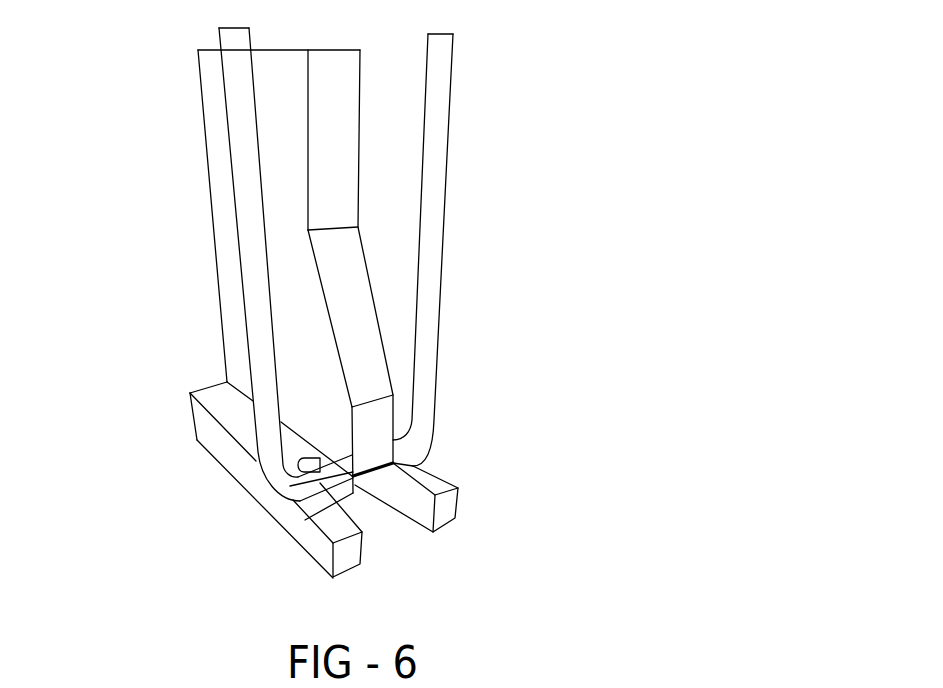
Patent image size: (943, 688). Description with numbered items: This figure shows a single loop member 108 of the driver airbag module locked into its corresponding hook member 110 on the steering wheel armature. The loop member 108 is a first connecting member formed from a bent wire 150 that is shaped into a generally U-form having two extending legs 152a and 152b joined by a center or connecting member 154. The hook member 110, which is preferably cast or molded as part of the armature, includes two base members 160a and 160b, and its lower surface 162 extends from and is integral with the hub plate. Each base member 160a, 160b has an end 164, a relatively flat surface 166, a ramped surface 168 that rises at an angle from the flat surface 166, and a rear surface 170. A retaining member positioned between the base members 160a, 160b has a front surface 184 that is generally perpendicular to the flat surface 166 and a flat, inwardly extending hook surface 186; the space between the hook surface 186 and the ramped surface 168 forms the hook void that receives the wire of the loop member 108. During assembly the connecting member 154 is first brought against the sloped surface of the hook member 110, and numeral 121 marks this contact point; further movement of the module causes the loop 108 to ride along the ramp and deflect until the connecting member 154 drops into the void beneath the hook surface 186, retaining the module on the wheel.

The first connecting member 108 is at (449, 257).
The hook member 110 is at (200, 143).
The contact point 121 is at (329, 249).
The bent wire 150 is at (455, 93).
The leg 152a is at (220, 187).
The leg 152b is at (437, 163).
The center or connecting member 154 is at (347, 497).
The base member 160a is at (318, 548).
The base member 160b is at (412, 486).
The lower surface 162 is at (275, 527).
The end 164 is at (352, 557).
The flat surface 166 is at (279, 525).
The ramped surface 168 is at (332, 463).
The rear surface 170 is at (223, 403).
The front surface 184 is at (343, 303).
The hook surface 186 is at (340, 462).